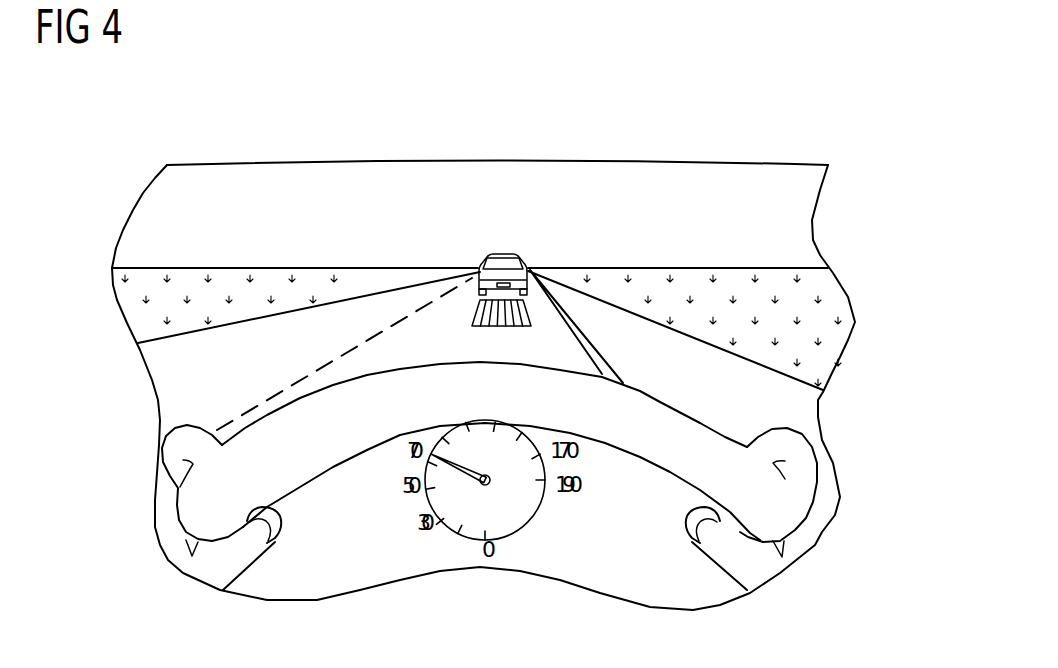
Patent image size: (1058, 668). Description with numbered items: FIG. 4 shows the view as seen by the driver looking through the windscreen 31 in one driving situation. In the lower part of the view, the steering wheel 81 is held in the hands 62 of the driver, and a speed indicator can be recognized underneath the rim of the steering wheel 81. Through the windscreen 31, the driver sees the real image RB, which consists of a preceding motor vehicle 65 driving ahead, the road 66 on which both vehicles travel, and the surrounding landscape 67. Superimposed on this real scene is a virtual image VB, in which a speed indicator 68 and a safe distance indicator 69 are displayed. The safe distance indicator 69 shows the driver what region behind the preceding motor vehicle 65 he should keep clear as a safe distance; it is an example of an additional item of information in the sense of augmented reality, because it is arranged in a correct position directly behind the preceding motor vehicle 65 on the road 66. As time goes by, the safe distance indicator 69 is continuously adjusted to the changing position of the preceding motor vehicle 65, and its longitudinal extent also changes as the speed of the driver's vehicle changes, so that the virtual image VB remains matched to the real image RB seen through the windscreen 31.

The windscreen 31 is at (158, 204).
The hands 62 is at (162, 508).
The preceding motor vehicle 65 is at (503, 260).
The road 66 is at (338, 328).
The landscape 67 is at (238, 287).
The speed indicator 68 is at (443, 343).
The safe distance indicator 69 is at (463, 313).
The steering wheel 81 is at (672, 425).
The virtual image VB is at (552, 309).
The real image RB is at (668, 218).